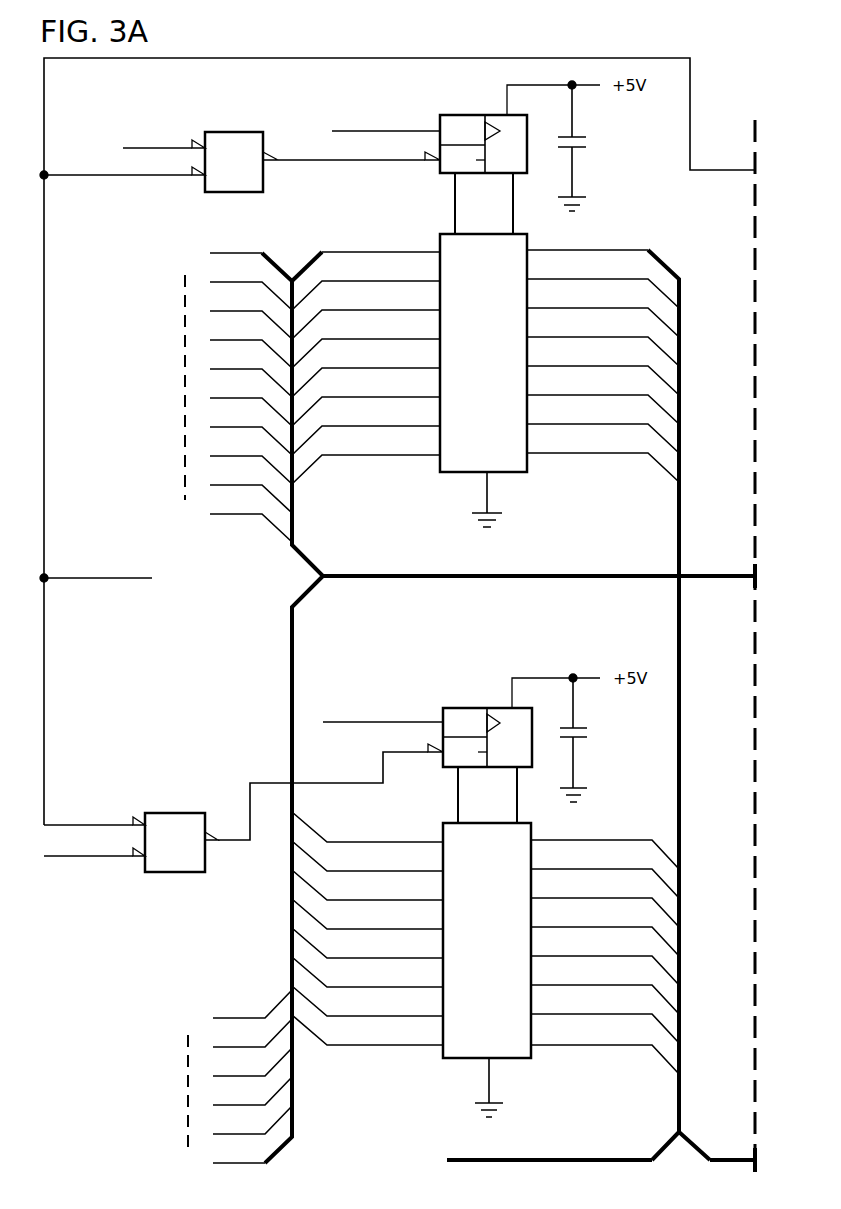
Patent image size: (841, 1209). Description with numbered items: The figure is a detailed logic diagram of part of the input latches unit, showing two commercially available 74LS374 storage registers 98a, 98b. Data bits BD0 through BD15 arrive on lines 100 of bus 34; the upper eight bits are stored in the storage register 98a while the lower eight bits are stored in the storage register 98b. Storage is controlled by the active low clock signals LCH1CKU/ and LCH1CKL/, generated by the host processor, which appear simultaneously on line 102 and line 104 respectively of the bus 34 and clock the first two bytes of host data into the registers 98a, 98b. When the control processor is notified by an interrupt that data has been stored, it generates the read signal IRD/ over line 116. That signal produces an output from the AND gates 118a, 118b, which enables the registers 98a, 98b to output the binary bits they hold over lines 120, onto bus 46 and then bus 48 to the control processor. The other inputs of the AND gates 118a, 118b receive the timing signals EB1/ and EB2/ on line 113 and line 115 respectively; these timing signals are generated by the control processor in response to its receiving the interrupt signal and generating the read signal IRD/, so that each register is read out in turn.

The line 116 is at (290, 58).
The line 113 is at (176, 148).
The AND gate 118a is at (232, 192).
The line 102 is at (425, 131).
The storage register 98a is at (507, 472).
The lines 100 is at (240, 517).
The bus 34 is at (502, 578).
The lines 120 is at (663, 477).
The bus 46 is at (682, 1090).
The bus 48 is at (575, 1160).
The line 104 is at (367, 725).
The storage register 98b is at (507, 1058).
The AND gate 118b is at (173, 872).
The line 115 is at (110, 858).